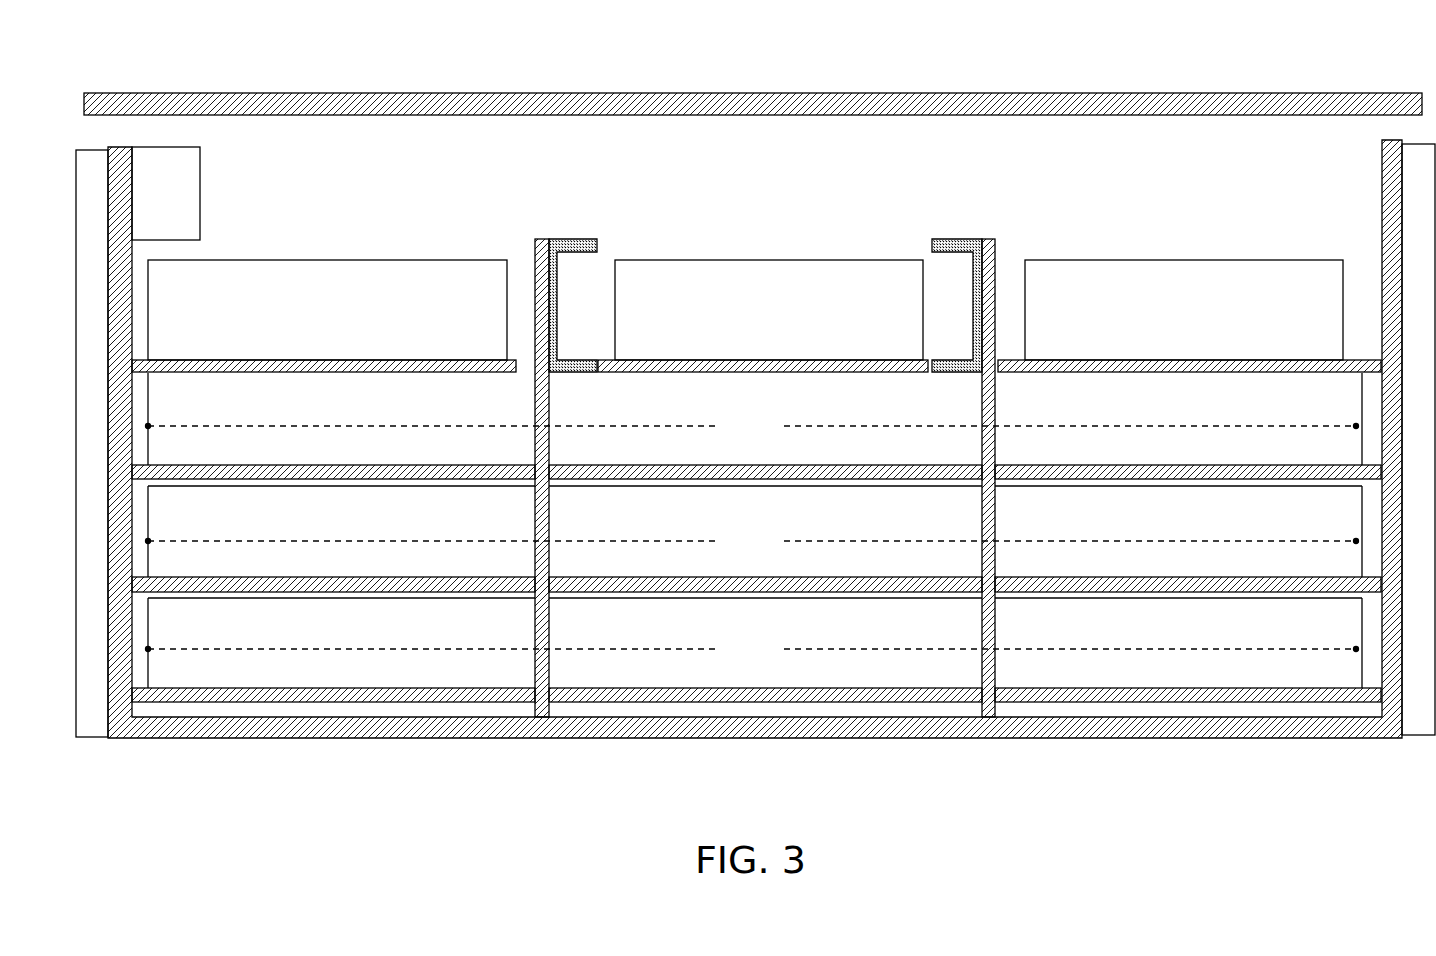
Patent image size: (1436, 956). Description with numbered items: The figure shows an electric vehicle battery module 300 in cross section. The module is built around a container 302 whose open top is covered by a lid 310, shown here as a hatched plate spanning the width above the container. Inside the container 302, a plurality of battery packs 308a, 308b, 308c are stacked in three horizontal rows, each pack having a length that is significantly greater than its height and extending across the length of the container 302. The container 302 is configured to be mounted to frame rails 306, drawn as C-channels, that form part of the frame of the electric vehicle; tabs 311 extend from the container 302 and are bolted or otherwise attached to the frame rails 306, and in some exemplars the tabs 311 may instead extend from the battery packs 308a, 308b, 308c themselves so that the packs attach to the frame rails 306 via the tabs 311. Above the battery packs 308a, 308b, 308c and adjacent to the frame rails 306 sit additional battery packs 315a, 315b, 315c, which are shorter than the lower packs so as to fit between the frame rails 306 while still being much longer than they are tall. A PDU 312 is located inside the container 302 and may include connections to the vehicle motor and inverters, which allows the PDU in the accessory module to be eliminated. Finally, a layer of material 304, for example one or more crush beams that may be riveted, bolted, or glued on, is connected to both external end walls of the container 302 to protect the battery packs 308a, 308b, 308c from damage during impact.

The electric vehicle battery module 300 is at (183, 30).
The container 302 is at (420, 739).
The layer of material 304 is at (100, 728).
The frame rails 306 is at (578, 238).
The battery pack 308a is at (780, 432).
The battery pack 308b is at (780, 551).
The battery pack 308c is at (780, 661).
The lid 310 is at (400, 92).
The tabs 311 is at (540, 238).
The PDU 312 is at (182, 200).
The additional battery pack 315a is at (358, 324).
The additional battery pack 315b is at (782, 324).
The additional battery pack 315c is at (1200, 324).